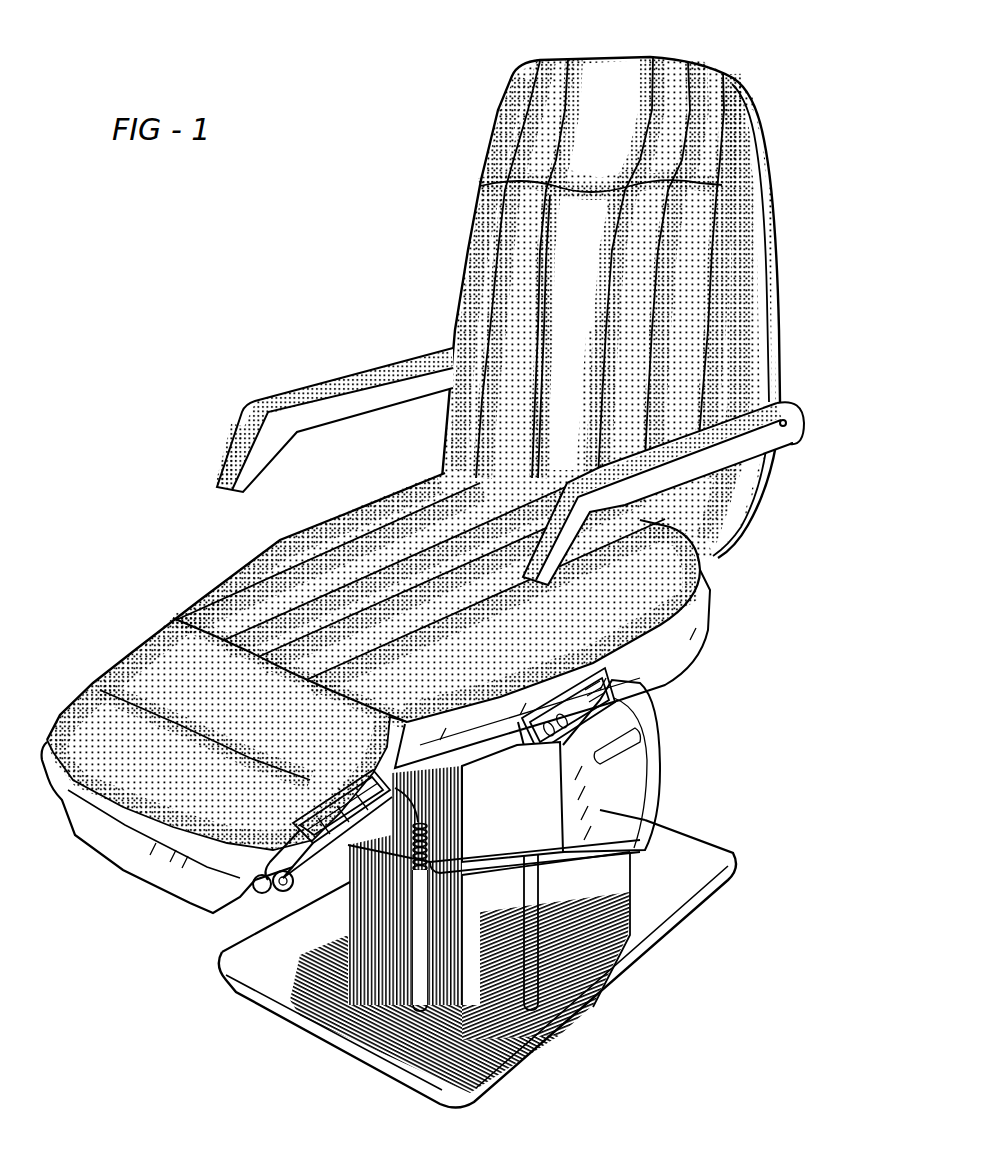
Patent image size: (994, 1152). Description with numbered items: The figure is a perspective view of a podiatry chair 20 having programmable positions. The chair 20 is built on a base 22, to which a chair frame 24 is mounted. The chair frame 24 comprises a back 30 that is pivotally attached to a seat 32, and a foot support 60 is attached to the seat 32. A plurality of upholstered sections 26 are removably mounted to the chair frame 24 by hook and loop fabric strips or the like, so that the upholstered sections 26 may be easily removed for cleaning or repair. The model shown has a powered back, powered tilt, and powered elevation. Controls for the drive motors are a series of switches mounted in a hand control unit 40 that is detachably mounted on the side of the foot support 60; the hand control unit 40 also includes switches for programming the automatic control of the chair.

The chair 20 is at (778, 268).
The base 22 is at (688, 797).
The chair frame 24 is at (743, 533).
The upholstered sections 26 is at (612, 93).
The back 30 is at (760, 135).
The seat 32 is at (680, 637).
The hand control unit 40 is at (303, 867).
The foot support 60 is at (155, 845).